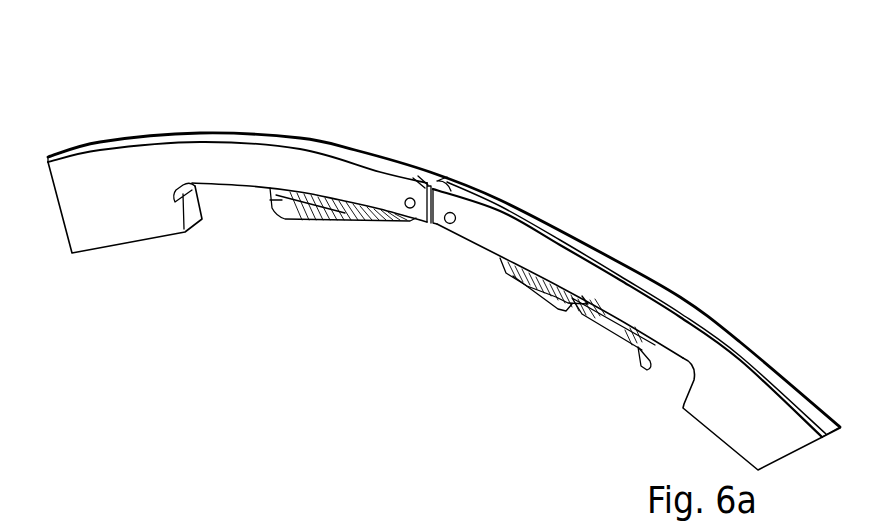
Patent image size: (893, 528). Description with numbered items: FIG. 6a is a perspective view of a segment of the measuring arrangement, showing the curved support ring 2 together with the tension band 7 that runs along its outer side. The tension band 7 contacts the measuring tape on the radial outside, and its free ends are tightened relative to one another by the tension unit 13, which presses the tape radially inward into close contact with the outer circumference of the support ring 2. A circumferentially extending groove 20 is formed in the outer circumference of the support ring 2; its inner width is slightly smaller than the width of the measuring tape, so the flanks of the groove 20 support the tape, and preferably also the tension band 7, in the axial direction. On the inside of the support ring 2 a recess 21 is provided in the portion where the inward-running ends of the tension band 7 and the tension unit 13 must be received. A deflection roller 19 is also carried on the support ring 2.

The support ring 2 is at (761, 414).
The tension band 7 is at (290, 148).
The tension unit 13 is at (617, 349).
The deflection roller 19 is at (410, 197).
The groove 20 is at (830, 414).
The recess 21 is at (183, 183).